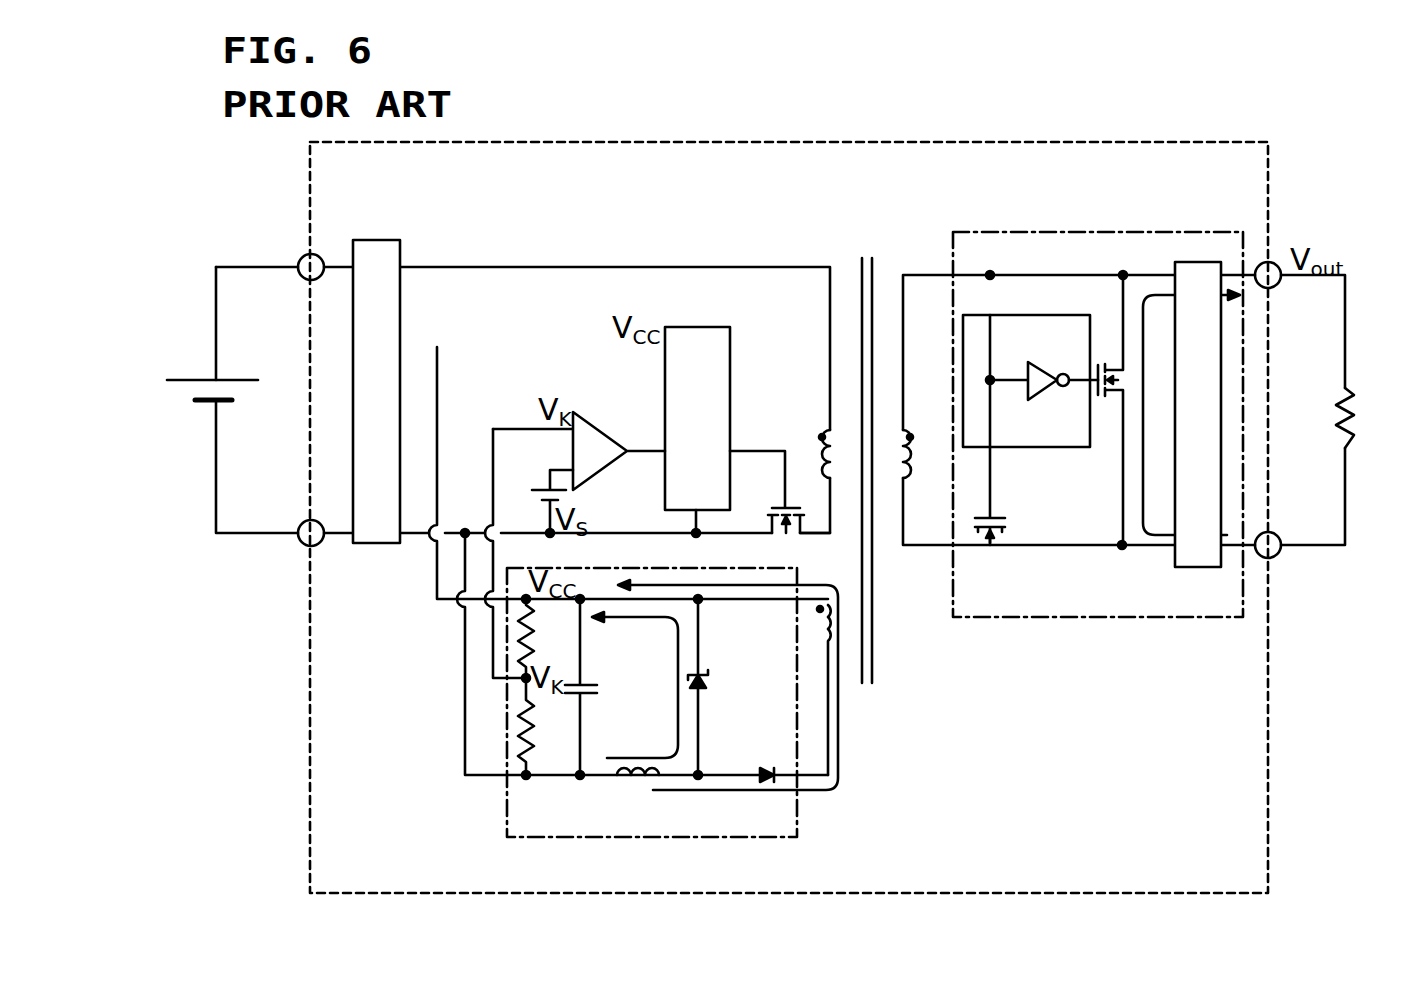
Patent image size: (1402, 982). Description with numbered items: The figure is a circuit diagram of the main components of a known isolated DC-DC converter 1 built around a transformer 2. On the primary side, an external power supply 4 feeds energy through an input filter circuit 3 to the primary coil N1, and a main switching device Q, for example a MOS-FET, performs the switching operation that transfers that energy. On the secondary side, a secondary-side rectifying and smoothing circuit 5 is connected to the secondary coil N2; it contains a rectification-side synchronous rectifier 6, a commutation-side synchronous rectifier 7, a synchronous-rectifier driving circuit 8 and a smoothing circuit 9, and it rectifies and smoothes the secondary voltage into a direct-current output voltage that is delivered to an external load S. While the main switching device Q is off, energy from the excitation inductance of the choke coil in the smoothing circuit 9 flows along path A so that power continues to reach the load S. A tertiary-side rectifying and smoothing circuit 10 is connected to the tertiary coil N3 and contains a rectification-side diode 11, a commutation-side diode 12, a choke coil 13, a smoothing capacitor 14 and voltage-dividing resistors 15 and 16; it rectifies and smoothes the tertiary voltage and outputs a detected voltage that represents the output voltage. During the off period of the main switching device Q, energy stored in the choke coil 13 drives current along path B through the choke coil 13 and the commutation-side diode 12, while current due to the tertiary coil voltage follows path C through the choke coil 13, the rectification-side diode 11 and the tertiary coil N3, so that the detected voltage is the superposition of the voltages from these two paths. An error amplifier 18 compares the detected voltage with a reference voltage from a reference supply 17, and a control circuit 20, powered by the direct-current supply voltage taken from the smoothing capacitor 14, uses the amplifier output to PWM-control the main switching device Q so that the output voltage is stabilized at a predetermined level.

The isolated DC-DC converter 1 is at (758, 142).
The transformer 2 is at (868, 250).
The input filter circuit 3 is at (375, 245).
The external power supply 4 is at (193, 378).
The secondary-side rectifying and smoothing circuit 5 is at (1077, 230).
The rectification-side synchronous rectifier 6 is at (990, 548).
The commutation-side synchronous rectifier 7 is at (1105, 420).
The synchronous-rectifier driving circuit 8 is at (1032, 448).
The smoothing circuit 9 is at (1195, 567).
The tertiary-side rectifying and smoothing circuit 10 is at (800, 818).
The rectification-side diode 11 is at (765, 765).
The commutation-side diode 12 is at (710, 680).
The choke coil 13 is at (643, 780).
The smoothing capacitor 14 is at (588, 683).
The voltage-dividing resistor 15 is at (530, 654).
The voltage-dividing resistor 16 is at (532, 718).
The reference supply 17 is at (545, 492).
The error amplifier 18 is at (600, 423).
The control circuit 20 is at (698, 328).
The primary coil N1 is at (818, 455).
The secondary coil N2 is at (912, 460).
The tertiary coil N3 is at (830, 645).
The main switching device Q is at (800, 540).
The path A is at (1145, 430).
The path B is at (680, 637).
The path C is at (840, 760).
The external load S is at (1352, 410).